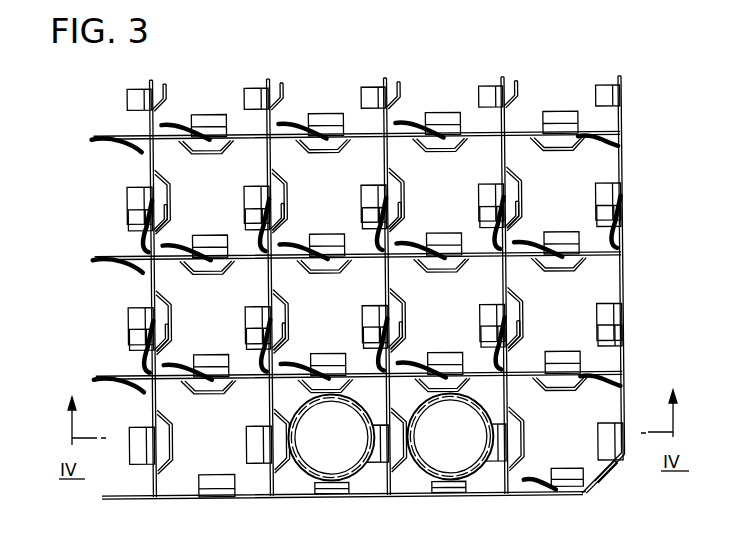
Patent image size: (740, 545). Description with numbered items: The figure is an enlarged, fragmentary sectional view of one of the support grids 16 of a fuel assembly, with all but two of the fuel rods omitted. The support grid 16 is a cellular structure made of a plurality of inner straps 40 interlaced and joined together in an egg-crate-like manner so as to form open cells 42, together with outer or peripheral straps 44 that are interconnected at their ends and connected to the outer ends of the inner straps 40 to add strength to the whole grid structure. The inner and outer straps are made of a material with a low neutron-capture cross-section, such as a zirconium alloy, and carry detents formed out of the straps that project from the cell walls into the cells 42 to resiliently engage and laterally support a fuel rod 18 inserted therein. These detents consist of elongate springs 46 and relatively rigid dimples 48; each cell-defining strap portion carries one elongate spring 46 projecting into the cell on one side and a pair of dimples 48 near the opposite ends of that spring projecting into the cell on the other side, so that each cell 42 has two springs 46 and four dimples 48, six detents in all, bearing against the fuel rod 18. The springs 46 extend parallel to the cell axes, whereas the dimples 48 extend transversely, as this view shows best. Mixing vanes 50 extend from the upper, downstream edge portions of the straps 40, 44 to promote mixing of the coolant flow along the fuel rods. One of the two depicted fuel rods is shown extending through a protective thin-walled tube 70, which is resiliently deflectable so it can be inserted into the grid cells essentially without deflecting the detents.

The support grid 16 is at (675, 212).
The fuel rod 18 is at (345, 493).
The inner strap 40 is at (477, 133).
The cell 42 is at (548, 160).
The outer strap 44 is at (580, 494).
The elongate spring 46 is at (345, 352).
The dimple 48 is at (426, 273).
The mixing vane 50 is at (294, 494).
The thin-walled tube 70 is at (484, 477).